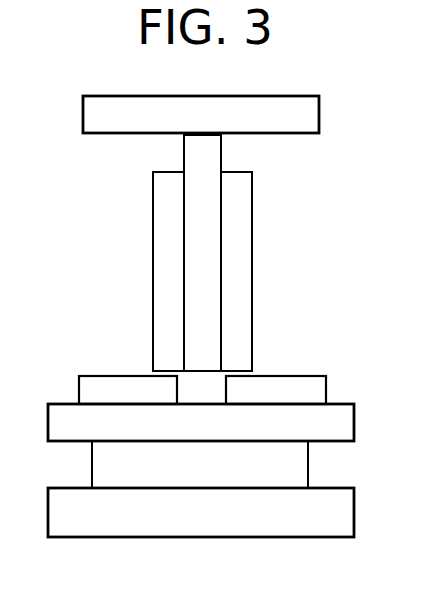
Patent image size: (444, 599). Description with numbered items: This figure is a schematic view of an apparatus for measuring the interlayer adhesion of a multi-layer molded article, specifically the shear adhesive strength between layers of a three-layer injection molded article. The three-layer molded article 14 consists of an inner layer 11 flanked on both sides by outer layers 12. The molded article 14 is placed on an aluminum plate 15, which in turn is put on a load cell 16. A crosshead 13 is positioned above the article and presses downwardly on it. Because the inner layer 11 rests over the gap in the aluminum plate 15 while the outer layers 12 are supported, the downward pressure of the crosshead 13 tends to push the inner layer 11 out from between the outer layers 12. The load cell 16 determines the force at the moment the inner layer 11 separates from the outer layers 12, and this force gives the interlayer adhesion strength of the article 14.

The inner layer 11 is at (205, 243).
The outer layers 12 is at (153, 198).
The crosshead 13 is at (307, 113).
The three-layer molded article 14 is at (238, 253).
The aluminum plate 15 is at (90, 388).
The load cell 16 is at (295, 462).